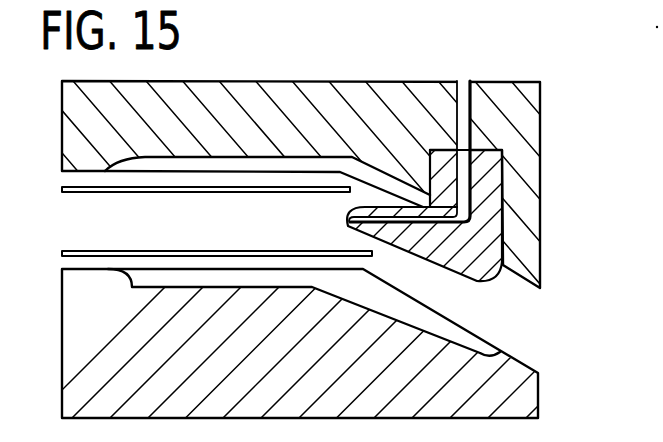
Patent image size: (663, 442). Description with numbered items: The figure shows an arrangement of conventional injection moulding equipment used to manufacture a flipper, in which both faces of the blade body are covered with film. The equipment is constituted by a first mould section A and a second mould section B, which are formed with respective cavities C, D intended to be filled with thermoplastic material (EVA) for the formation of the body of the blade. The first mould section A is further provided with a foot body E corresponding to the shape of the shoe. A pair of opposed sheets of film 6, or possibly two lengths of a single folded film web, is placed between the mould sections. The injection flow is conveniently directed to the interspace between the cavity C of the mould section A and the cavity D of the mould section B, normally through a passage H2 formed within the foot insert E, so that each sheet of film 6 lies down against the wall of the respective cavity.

The first mould section A is at (412, 115).
The second mould section B is at (527, 395).
The cavity C is at (303, 174).
The cavity D is at (300, 288).
The foot body E is at (478, 246).
The passage H2 is at (423, 225).
The sheets of film 6 is at (98, 192).